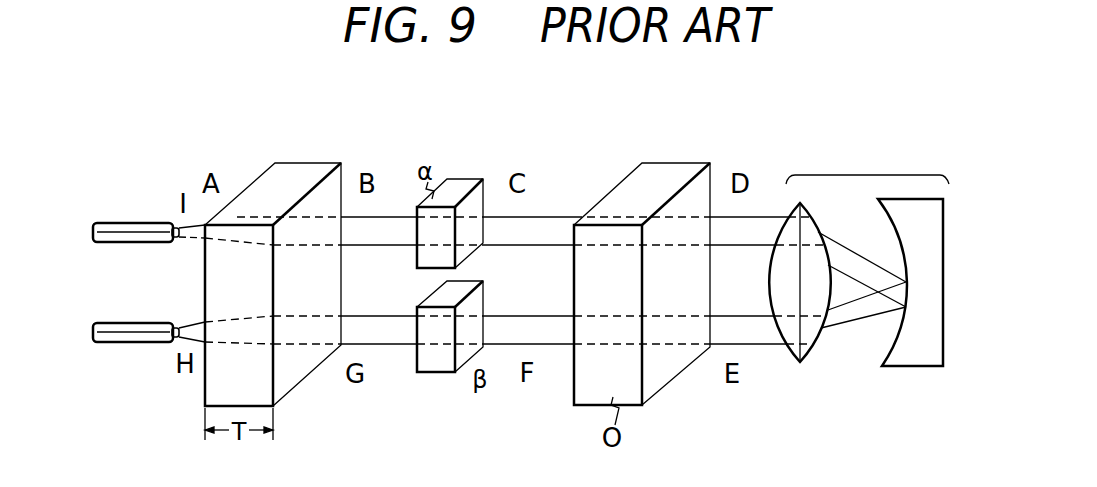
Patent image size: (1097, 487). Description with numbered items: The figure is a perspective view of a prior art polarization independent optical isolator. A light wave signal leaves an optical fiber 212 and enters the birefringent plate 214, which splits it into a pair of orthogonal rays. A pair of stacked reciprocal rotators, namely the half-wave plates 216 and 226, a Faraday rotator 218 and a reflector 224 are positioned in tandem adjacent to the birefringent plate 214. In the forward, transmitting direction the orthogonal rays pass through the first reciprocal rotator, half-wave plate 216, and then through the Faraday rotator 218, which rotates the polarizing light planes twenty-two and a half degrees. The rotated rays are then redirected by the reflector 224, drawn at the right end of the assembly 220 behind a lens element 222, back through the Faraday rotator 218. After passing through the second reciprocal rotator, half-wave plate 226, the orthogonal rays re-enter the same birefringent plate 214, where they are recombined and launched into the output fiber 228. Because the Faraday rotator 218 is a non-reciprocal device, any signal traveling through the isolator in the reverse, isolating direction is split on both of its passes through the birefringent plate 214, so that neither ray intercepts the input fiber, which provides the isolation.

The first optical fiber 212 is at (145, 222).
The birefringent plate 214 is at (318, 161).
The half-wave plate 216 is at (472, 179).
The Faraday rotator 218 is at (690, 162).
The reflector assembly 220 is at (872, 172).
The lens 222 is at (796, 363).
The reflector 224 is at (906, 362).
The half-wave plate 226 is at (435, 373).
The second optical fiber 228 is at (151, 322).